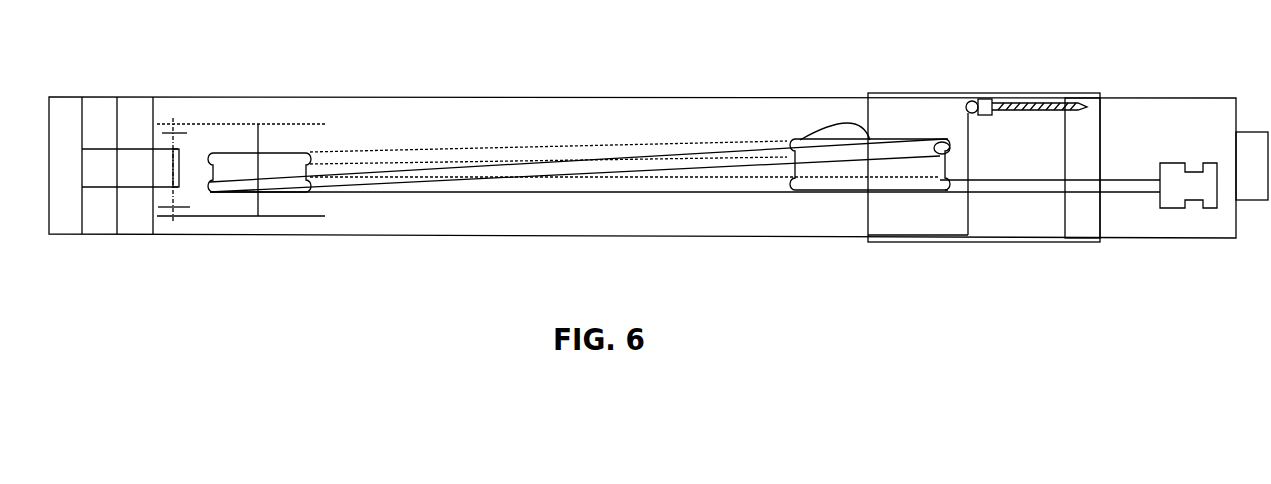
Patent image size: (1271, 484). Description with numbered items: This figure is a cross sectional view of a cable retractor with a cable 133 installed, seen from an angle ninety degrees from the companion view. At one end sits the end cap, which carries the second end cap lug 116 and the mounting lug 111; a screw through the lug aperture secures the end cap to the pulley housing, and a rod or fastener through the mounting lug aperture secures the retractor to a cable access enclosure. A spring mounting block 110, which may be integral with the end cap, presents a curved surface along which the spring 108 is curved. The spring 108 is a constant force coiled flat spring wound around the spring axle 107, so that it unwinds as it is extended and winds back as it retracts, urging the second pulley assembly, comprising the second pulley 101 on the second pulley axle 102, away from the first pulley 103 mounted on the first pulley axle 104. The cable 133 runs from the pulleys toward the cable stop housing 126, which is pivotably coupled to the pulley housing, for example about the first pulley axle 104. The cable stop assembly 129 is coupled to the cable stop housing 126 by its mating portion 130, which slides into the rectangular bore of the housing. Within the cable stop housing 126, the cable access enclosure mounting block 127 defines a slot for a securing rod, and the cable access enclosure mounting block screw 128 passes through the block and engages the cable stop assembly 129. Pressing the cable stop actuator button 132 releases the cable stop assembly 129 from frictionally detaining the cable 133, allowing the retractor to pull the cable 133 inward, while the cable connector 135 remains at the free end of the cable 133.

The second pulley 101 is at (297, 153).
The second pulley axle 102 is at (258, 170).
The first pulley 103 is at (840, 138).
The first pulley axle 104 is at (797, 142).
The spring axle 107 is at (173, 147).
The spring 108 is at (157, 235).
The spring mounting block 110 is at (100, 100).
The mounting lug 111 is at (63, 235).
The second end cap lug 116 is at (143, 100).
The cable stop housing 126 is at (912, 242).
The cable access enclosure mounting block 127 is at (985, 97).
The cable access enclosure mounting block screw 128 is at (1033, 97).
The cable stop assembly 129 is at (1130, 242).
The mating portion 130 is at (1083, 242).
The cable stop actuator button 132 is at (1253, 132).
The cable 133 is at (993, 194).
The cable connector 135 is at (1195, 200).